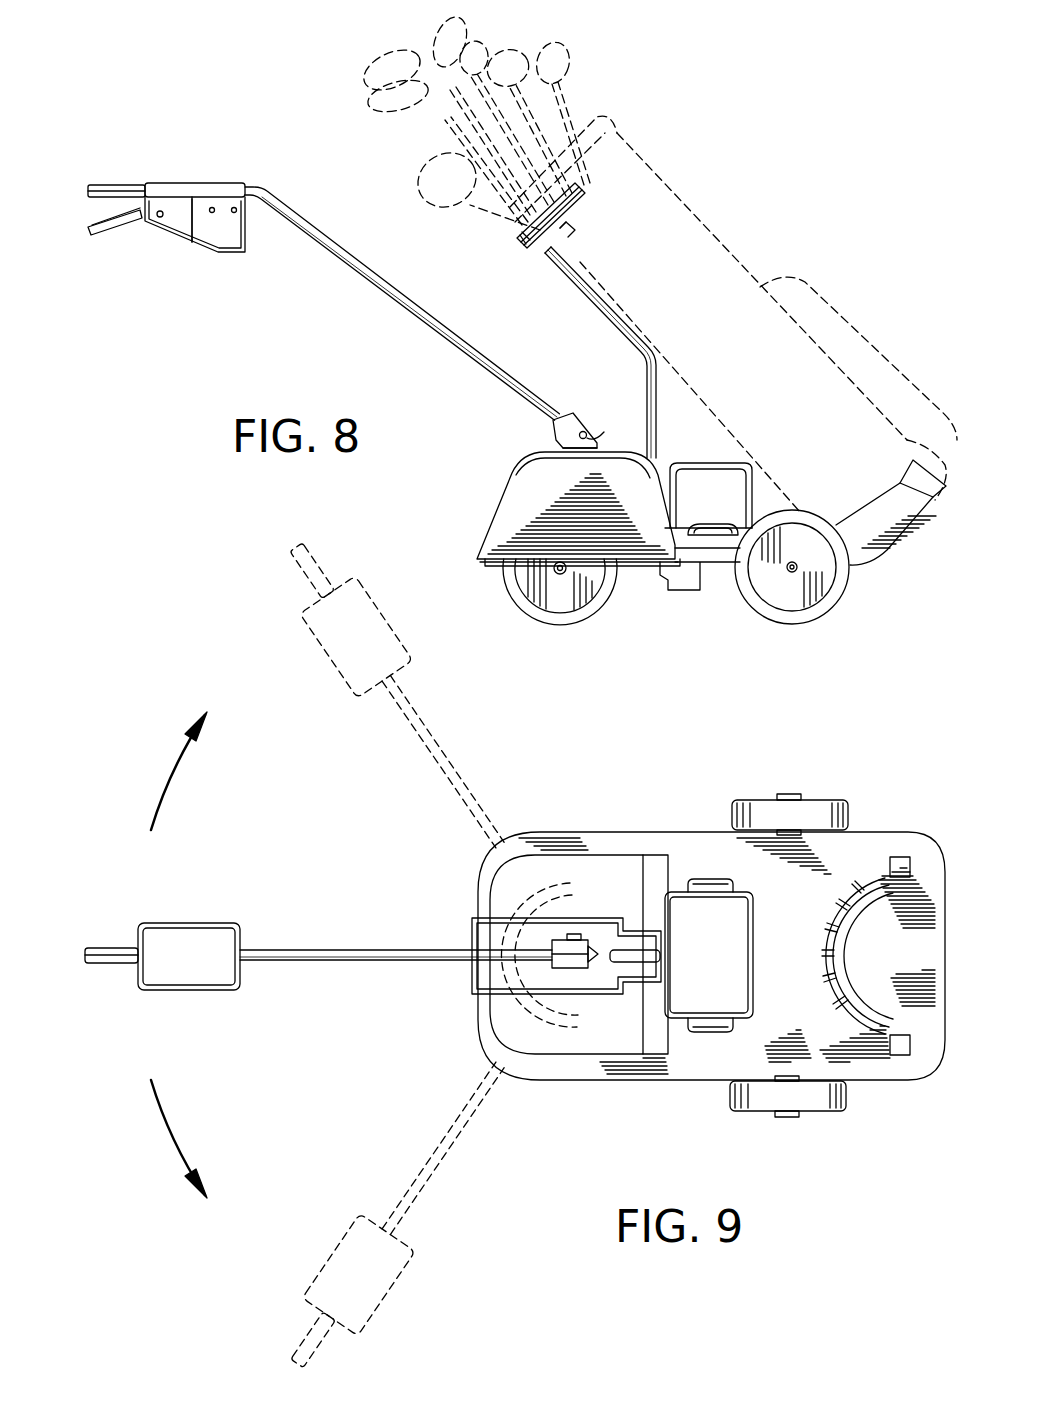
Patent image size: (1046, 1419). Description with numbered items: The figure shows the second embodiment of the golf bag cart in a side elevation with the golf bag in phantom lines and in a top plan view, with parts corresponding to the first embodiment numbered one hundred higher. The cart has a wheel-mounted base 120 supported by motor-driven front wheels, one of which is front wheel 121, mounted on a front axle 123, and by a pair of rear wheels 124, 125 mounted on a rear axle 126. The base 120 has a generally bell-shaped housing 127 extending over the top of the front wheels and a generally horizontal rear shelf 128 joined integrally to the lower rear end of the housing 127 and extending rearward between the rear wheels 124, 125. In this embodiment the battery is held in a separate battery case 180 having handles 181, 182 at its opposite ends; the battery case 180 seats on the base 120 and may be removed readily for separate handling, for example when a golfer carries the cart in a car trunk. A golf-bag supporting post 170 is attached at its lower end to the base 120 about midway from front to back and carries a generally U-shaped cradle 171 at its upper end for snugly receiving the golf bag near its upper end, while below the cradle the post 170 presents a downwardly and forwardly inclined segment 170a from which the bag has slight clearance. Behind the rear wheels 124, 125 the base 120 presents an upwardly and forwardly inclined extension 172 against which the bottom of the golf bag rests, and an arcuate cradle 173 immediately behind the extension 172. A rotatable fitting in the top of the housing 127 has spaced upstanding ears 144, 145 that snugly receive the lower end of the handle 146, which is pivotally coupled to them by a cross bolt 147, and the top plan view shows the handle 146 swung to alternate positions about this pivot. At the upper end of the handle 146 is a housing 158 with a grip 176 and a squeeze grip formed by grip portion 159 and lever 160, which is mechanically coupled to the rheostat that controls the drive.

In FIG. 8, the base 120 is at (422, 512).
In FIG. 9, the base 120 is at (568, 780).
In FIG. 8, the front wheel 121 is at (600, 600).
In FIG. 8, the front axle 123 is at (554, 572).
In FIG. 8, the rear wheel 124 is at (850, 588).
In FIG. 9, the rear wheel 124 is at (846, 1103).
In FIG. 9, the rear wheel 125 is at (812, 806).
In FIG. 9, the rear axle 126 is at (786, 794).
In FIG. 8, the housing 127 is at (512, 492).
In FIG. 9, the housing 127 is at (575, 1050).
In FIG. 8, the rear shelf 128 is at (703, 552).
In FIG. 8, the ear 144 is at (558, 435).
In FIG. 9, the ear 144 is at (570, 968).
In FIG. 9, the ear 145 is at (574, 934).
In FIG. 8, the handle 146 is at (437, 330).
In FIG. 9, the handle 146 is at (324, 962).
In FIG. 8, the cross bolt 147 is at (610, 426).
In FIG. 8, the housing 158 is at (216, 246).
In FIG. 8, the squeeze grip 159 is at (107, 188).
In FIG. 9, the squeeze grip 159 is at (112, 948).
In FIG. 8, the lever 160 is at (106, 238).
In FIG. 8, the golf-bag supporting post 170 is at (645, 398).
In FIG. 8, the inclined segment 170a is at (565, 280).
In FIG. 9, the inclined segment 170a is at (634, 948).
In FIG. 8, the cradle 171 is at (567, 215).
In FIG. 9, the cradle 171 is at (545, 888).
In FIG. 8, the extension 172 is at (905, 525).
In FIG. 9, the extension 172 is at (922, 900).
In FIG. 9, the arcuate cradle 173 is at (845, 963).
In FIG. 8, the handle grip housing 176 is at (205, 183).
In FIG. 9, the handle grip housing 176 is at (208, 925).
In FIG. 8, the battery case 180 is at (697, 468).
In FIG. 9, the battery case 180 is at (720, 966).
In FIG. 8, the handle 181 is at (712, 524).
In FIG. 9, the handle 181 is at (712, 1030).
In FIG. 9, the handle 182 is at (712, 880).